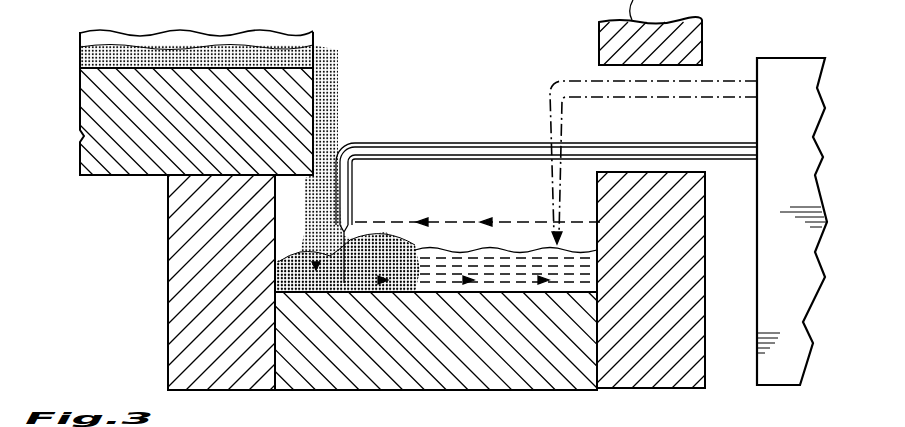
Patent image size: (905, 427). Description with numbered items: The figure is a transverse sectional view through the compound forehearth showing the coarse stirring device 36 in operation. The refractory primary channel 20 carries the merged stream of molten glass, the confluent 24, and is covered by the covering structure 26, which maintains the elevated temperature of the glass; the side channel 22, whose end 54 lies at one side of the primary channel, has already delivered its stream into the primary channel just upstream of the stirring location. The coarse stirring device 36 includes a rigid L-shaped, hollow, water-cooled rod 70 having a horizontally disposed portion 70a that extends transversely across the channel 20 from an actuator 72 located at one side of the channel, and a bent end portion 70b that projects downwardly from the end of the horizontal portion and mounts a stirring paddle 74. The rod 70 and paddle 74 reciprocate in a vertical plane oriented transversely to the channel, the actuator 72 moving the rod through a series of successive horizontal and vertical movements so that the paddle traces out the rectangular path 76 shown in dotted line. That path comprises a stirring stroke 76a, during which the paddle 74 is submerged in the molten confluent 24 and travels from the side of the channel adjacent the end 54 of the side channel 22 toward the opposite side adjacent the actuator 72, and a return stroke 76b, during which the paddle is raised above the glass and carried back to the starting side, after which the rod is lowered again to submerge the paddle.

The primary channel 20 is at (597, 193).
The side channel 22 is at (125, 65).
The confluent of molten glass 24 is at (530, 252).
The covering structure 26 is at (382, 301).
The coarse stirring device 36 is at (749, 66).
The end of side channel 54 is at (330, 100).
The rod 70 is at (546, 190).
The horizontally disposed portion 70a is at (443, 145).
The bent end portion 70b is at (352, 189).
The actuator 72 is at (805, 124).
The stirring paddle 74 is at (358, 235).
The rectangular path 76 is at (566, 243).
The stirring stroke 76a is at (458, 290).
The return stroke 76b is at (457, 220).